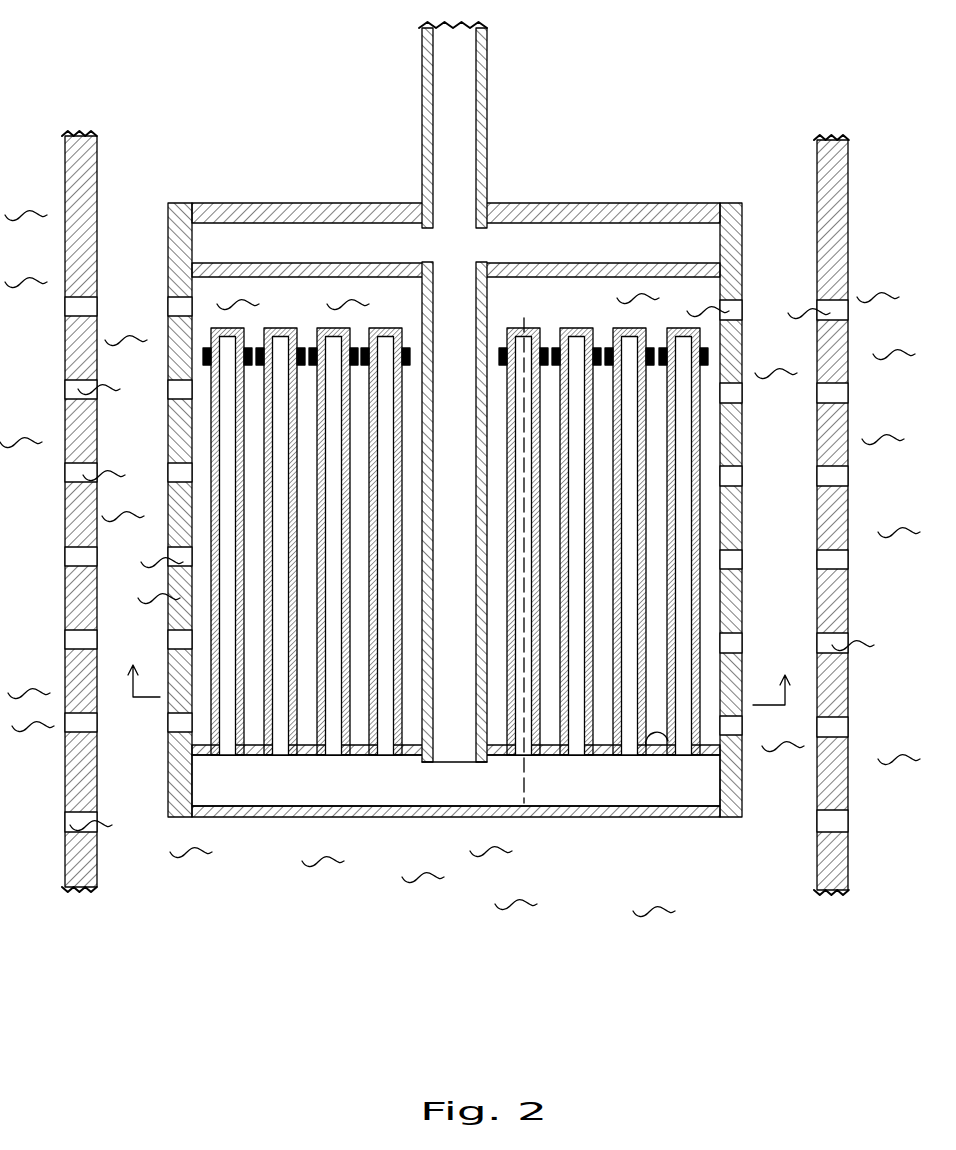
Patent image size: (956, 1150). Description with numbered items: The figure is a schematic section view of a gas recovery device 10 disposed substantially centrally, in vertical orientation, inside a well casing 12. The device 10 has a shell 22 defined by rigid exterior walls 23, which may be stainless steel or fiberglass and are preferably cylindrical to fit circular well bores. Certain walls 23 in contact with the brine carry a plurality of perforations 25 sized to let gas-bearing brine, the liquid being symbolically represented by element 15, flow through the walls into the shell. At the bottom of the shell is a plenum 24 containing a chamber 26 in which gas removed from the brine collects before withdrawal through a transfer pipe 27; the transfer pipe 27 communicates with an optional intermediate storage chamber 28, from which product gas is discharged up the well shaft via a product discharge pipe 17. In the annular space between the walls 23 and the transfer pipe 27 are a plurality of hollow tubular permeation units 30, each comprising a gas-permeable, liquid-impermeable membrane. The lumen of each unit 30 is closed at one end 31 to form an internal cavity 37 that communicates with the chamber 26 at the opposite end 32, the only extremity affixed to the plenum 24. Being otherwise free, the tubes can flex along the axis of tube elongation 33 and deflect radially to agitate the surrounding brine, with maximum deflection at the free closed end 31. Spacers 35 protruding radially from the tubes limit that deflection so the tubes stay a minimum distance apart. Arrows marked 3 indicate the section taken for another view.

The section line for FIG. 3 is at (460, 670).
The gas recovery device 10 is at (612, 203).
The well casing 12 is at (815, 175).
The liquid 15 is at (412, 878).
The product discharge pipe 17 is at (487, 163).
The shell 22 is at (168, 452).
The rigid exterior walls 23 is at (740, 570).
The plenum 24 is at (315, 818).
The perforations 25 is at (740, 562).
The chamber 26 is at (604, 795).
The transfer pipe 27 is at (421, 300).
The intermediate storage chamber 28 is at (525, 250).
The permeation unit 30 is at (698, 420).
The closed end 31 is at (631, 330).
The opposite end 32 is at (669, 742).
The axis of tube elongation 33 is at (525, 785).
The spacer 35 is at (313, 348).
The internal cavity 37 is at (686, 380).